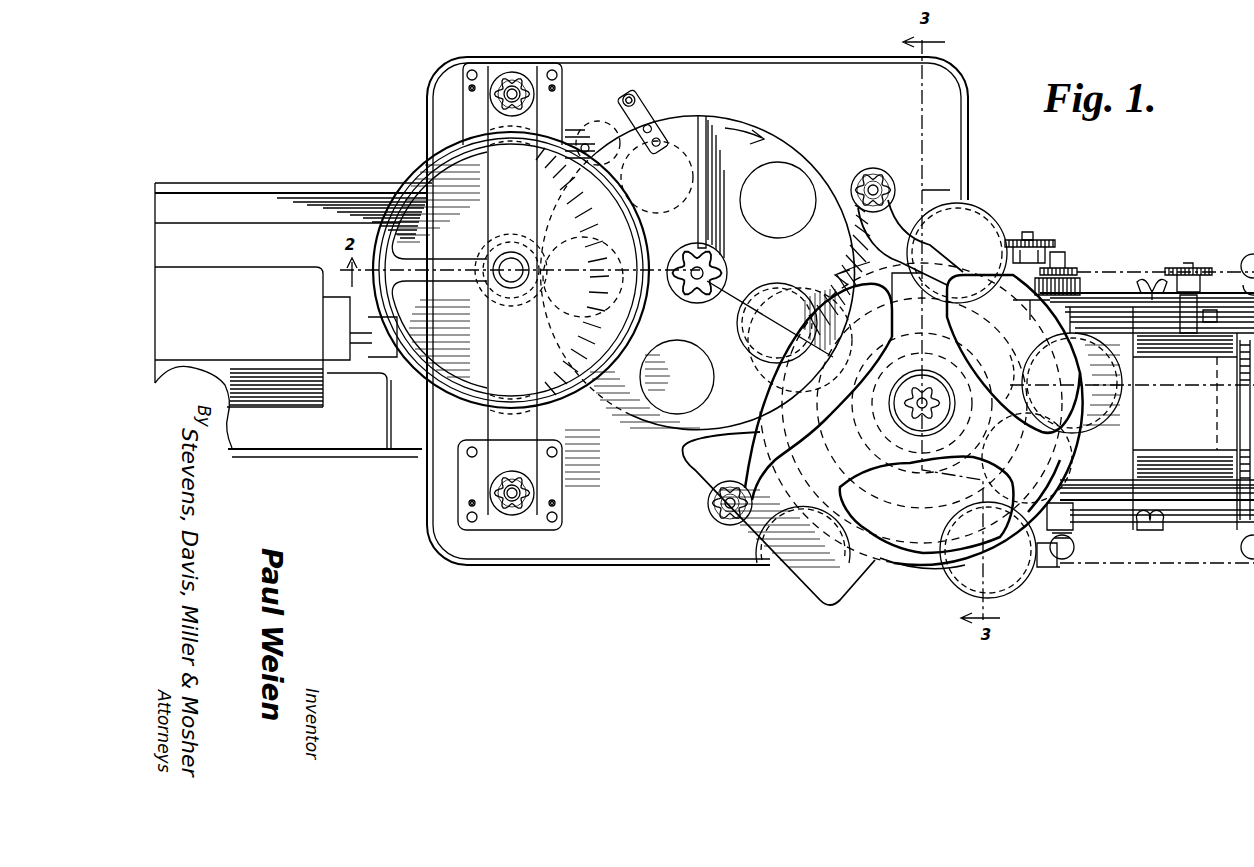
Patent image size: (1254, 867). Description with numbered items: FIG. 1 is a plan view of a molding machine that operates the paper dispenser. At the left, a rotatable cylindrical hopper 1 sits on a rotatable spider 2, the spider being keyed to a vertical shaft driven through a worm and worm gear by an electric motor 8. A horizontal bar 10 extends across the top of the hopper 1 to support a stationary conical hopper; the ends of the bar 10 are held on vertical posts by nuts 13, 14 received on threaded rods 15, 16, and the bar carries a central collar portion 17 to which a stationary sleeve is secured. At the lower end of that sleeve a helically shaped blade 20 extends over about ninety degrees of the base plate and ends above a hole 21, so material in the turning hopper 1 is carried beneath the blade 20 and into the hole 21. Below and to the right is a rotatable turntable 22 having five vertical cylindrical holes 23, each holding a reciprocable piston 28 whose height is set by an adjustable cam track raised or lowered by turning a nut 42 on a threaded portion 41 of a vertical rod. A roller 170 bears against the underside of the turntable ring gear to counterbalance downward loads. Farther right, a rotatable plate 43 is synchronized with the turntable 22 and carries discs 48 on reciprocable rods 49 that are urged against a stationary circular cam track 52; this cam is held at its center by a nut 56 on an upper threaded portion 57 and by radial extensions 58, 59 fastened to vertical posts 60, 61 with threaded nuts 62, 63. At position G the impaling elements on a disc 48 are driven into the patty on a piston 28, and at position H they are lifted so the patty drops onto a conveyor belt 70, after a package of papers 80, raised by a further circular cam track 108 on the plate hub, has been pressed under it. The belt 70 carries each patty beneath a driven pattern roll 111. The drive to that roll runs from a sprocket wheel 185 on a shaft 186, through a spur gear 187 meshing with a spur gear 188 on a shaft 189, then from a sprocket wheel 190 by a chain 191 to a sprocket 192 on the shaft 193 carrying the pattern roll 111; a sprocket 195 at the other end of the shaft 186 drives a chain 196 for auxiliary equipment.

The rotatable cylindrical hopper 1 is at (416, 186).
The rotatable spider 2 is at (432, 268).
The electric motor 8 is at (233, 339).
The horizontal bar 10 is at (490, 191).
The nut 13 is at (514, 505).
The nut 14 is at (514, 86).
The threaded rod 15 is at (508, 500).
The threaded rod 16 is at (507, 80).
The central collar portion 17 is at (493, 253).
The helically shaped blade 20 is at (497, 337).
The hole 21 is at (640, 232).
The rotatable turntable 22 is at (764, 134).
The vertical cylindrical holes 23 is at (803, 180).
The piston 28 is at (772, 209).
The threaded portion 41 is at (710, 258).
The nut 42 is at (700, 296).
The rotatable plate 43 is at (945, 585).
The disc 48 is at (796, 284).
The reciprocable rod 49 is at (914, 387).
The circular cam track 52 is at (908, 568).
The nut 56 is at (902, 398).
The upper threaded portion 57 is at (926, 398).
The radial extension 58 is at (713, 502).
The radial extension 59 is at (880, 176).
The vertical post 60 is at (730, 525).
The vertical post 61 is at (868, 176).
The threaded nut 62 is at (716, 520).
The threaded nut 63 is at (892, 184).
The conveyor belt 70 is at (1117, 473).
The package of papers 80 is at (830, 603).
The circular cam track 108 is at (1000, 355).
The pattern roll 111 is at (1184, 418).
The roller 170 is at (598, 132).
The sprocket wheel 185 is at (1042, 246).
The shaft 186 is at (1028, 232).
The spur gear 187 is at (1004, 302).
The spur gear 188 is at (1062, 282).
The shaft 189 is at (1070, 262).
The sprocket wheel 190 is at (1078, 272).
The chain 191 is at (1152, 262).
The sprocket 192 is at (1250, 258).
The shaft 193 is at (1186, 265).
The sprocket 195 is at (1046, 562).
The chain 196 is at (1188, 564).
The impaling position G is at (765, 286).
The release position H is at (1072, 462).